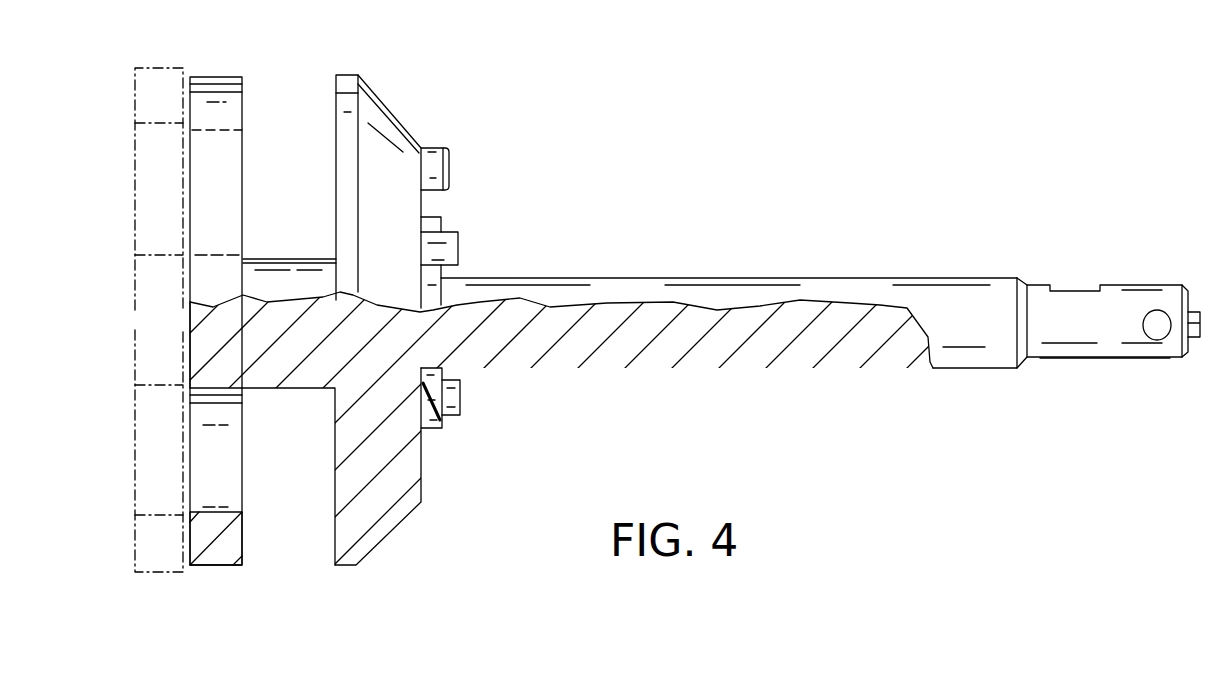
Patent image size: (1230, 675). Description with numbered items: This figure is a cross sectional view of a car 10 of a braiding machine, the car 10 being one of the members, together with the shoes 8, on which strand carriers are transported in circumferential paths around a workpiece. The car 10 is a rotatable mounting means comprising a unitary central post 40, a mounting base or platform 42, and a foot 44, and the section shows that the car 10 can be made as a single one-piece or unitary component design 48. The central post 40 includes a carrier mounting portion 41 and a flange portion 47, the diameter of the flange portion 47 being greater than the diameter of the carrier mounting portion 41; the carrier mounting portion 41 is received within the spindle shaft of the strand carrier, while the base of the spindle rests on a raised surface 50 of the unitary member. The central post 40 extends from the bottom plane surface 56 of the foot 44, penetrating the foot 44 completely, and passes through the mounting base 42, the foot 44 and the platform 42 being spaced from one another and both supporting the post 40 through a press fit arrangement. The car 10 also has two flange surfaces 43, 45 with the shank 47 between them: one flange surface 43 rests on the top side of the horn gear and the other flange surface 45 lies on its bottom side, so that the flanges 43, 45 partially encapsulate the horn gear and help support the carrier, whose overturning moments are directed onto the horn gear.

The shoe 8 is at (140, 98).
The car 10 is at (752, 145).
The central post 40 is at (820, 282).
The carrier mounting portion 41 is at (765, 278).
The mounting base 42 is at (378, 545).
The flange surface 43 is at (335, 537).
The foot 44 is at (210, 567).
The flange surface 45 is at (243, 540).
The flange portion 47 is at (275, 258).
The unitary component design 48 is at (498, 337).
The raised surface 50 is at (432, 428).
The bottom plane surface 56 is at (188, 342).